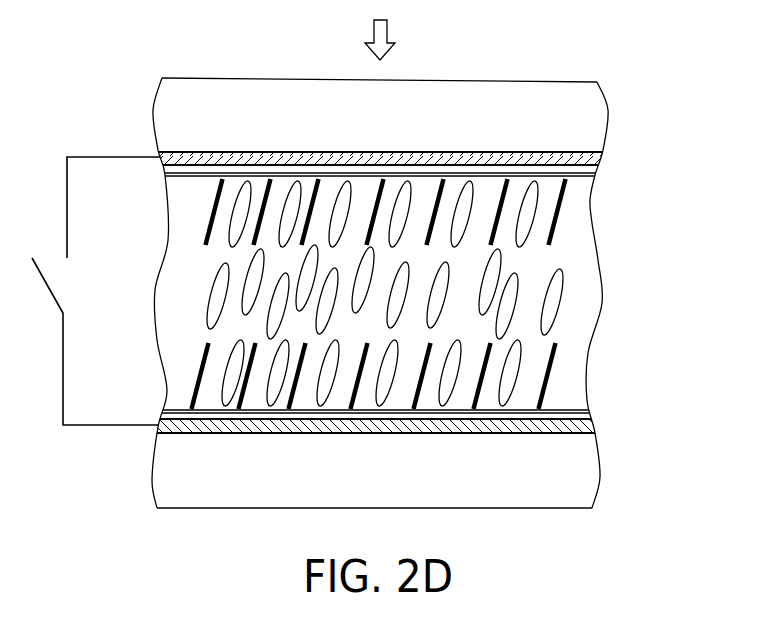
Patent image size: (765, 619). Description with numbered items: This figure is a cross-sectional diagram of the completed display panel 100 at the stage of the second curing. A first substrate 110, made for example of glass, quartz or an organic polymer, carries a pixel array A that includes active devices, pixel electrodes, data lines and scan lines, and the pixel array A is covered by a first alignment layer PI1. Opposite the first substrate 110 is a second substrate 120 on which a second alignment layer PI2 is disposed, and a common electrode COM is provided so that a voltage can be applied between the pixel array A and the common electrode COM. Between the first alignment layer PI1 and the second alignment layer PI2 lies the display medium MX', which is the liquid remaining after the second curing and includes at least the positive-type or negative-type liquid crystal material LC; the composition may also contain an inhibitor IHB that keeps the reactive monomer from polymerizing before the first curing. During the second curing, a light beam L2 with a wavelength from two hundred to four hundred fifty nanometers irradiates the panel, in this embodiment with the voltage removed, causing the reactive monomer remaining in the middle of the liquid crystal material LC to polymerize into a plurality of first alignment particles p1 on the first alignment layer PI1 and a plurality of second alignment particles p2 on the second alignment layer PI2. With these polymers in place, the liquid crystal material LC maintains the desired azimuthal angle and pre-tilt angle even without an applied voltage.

The display panel 100 is at (431, 324).
The first substrate 110 is at (577, 132).
The second substrate 120 is at (572, 482).
The pixel array A is at (573, 164).
The first alignment layer PI1 is at (575, 176).
The second alignment layer PI2 is at (570, 420).
The common electrode COM is at (578, 431).
The inhibitor IHB is at (573, 227).
The liquid crystal material LC is at (556, 308).
The first alignment particles p1 is at (553, 242).
The second alignment particles p2 is at (548, 380).
The display medium MX' is at (711, 352).
The light beam L2 is at (387, 33).